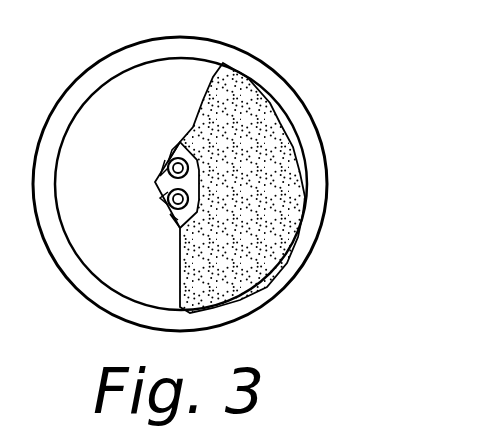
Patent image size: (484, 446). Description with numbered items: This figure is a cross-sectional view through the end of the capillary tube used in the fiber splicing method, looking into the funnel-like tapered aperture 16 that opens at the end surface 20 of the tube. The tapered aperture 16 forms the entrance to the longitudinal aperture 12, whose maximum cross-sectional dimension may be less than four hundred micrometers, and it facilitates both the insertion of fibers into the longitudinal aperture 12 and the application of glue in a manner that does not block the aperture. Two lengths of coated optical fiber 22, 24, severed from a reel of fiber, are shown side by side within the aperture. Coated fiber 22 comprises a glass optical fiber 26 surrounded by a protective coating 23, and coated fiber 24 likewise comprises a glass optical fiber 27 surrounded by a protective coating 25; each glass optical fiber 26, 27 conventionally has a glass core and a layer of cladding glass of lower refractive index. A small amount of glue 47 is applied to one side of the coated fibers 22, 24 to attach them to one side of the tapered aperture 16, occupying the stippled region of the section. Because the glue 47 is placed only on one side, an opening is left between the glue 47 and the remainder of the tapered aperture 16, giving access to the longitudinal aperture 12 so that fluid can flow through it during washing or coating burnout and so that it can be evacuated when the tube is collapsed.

The end surface 20 is at (262, 72).
The tapered aperture 16 is at (184, 101).
The glue 47 is at (193, 270).
The longitudinal aperture 12 is at (158, 173).
The protective coating 23 is at (173, 152).
The glass optical fiber 26 is at (168, 164).
The coated optical fiber 22 is at (193, 163).
The coated optical fiber 24 is at (194, 200).
The glass optical fiber 27 is at (167, 200).
The protective coating 25 is at (178, 214).